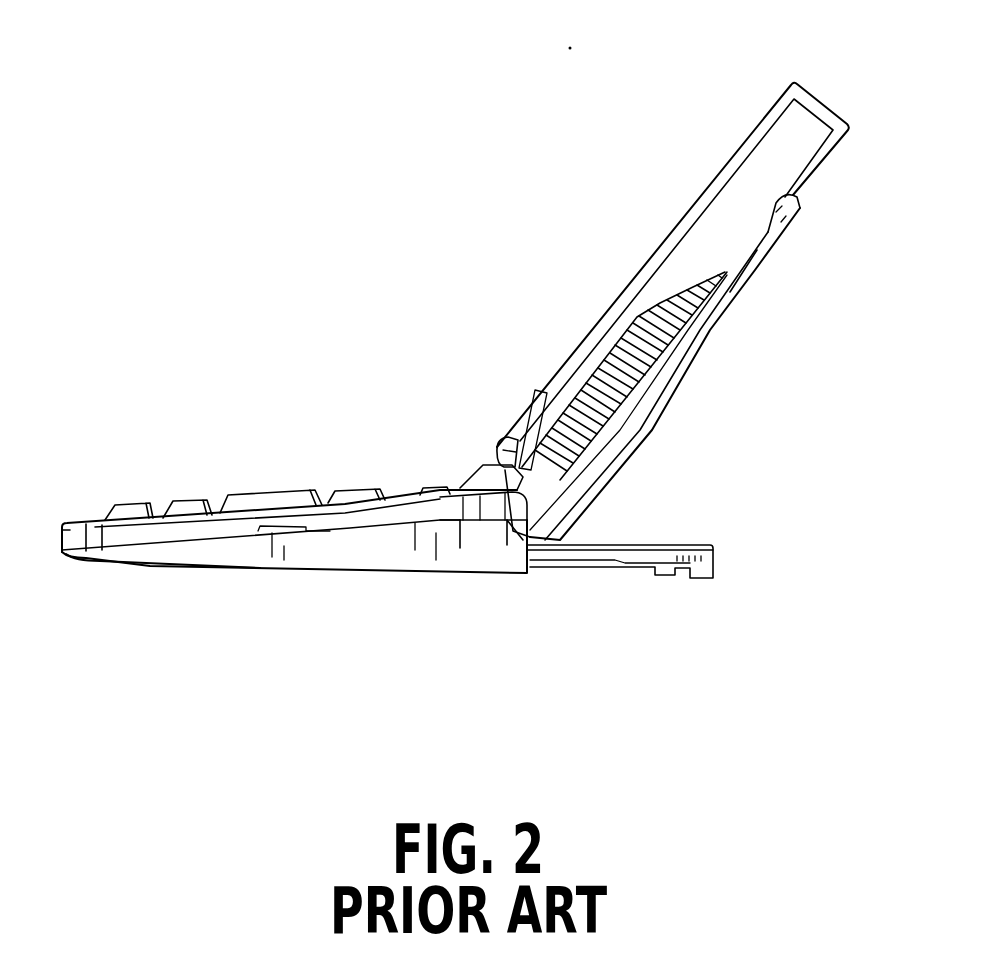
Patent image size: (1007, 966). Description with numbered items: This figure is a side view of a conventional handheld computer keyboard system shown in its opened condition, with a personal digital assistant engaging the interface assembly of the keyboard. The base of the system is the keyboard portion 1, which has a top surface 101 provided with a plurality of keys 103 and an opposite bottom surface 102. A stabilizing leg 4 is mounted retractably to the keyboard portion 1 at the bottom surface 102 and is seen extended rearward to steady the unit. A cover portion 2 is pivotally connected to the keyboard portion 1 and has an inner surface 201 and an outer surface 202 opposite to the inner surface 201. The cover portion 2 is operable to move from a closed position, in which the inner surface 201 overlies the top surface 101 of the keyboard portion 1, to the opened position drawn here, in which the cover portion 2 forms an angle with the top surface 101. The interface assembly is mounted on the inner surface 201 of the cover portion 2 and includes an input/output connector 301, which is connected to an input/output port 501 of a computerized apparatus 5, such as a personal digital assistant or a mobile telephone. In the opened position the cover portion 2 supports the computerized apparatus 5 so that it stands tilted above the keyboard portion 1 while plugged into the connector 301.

The keyboard portion 1 is at (250, 566).
The top surface 101 is at (88, 521).
The bottom surface 102 is at (84, 559).
The keys 103 is at (263, 490).
The cover portion 2 is at (684, 281).
The inner surface 201 is at (755, 237).
The outer surface 202 is at (717, 333).
The input/output connector 301 is at (465, 404).
The input/output port 501 is at (503, 442).
The stabilizing leg 4 is at (652, 575).
The computerized apparatus 5 is at (738, 140).